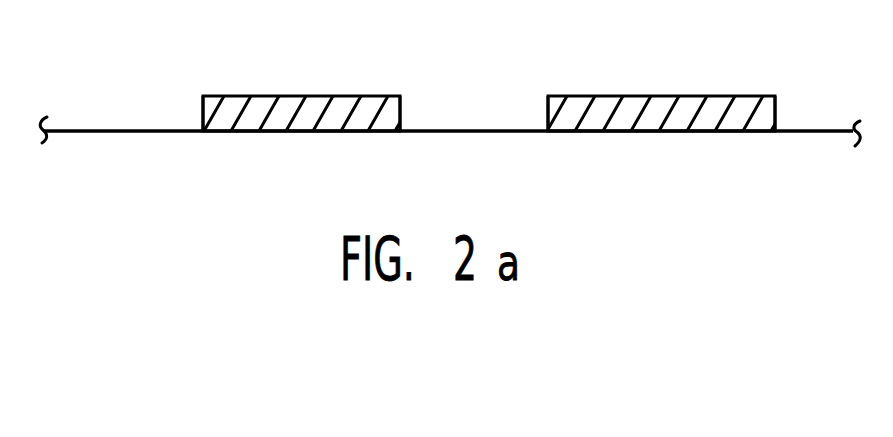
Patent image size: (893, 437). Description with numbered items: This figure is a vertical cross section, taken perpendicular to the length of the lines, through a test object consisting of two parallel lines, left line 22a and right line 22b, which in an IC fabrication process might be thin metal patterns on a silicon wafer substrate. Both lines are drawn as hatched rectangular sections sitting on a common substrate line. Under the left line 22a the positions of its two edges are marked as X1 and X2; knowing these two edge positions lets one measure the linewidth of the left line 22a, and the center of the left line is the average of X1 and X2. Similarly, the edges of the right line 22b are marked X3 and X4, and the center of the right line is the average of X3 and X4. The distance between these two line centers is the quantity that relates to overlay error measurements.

The left test object line 22a is at (355, 96).
The right test object line 22b is at (687, 96).
The first edge position X1 is at (206, 143).
The second edge position X2 is at (401, 143).
The third edge position X3 is at (547, 143).
The fourth edge position X4 is at (772, 143).